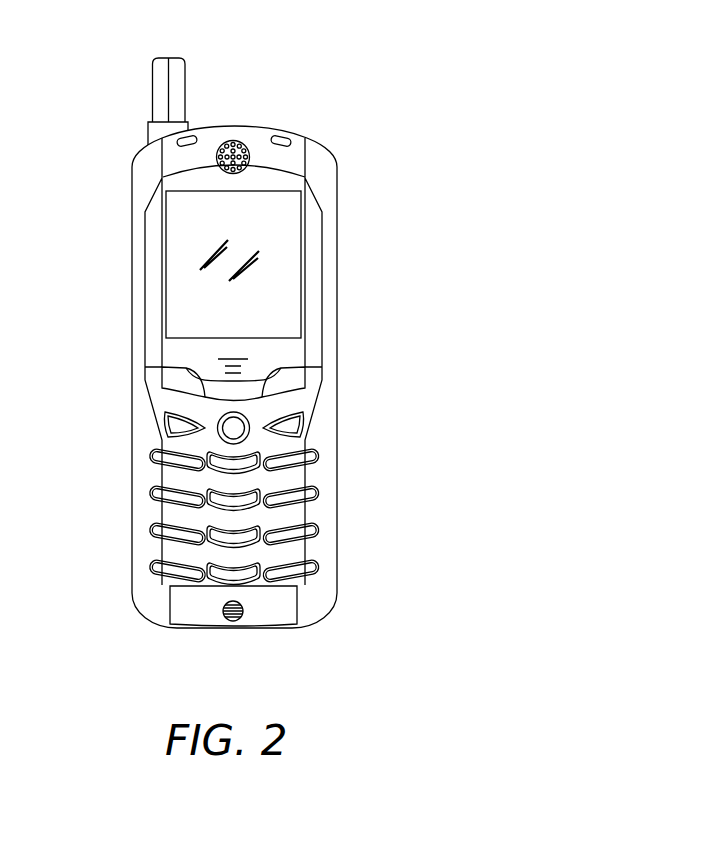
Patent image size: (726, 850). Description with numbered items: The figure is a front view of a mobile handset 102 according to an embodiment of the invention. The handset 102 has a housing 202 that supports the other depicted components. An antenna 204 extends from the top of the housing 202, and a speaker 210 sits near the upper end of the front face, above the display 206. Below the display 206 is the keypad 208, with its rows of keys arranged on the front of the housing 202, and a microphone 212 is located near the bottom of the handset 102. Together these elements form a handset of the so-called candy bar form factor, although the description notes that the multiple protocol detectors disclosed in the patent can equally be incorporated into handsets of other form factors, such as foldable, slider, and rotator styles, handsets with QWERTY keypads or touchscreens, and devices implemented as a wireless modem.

The mobile handset 102 is at (603, 70).
The housing 202 is at (308, 143).
The antenna 204 is at (152, 92).
The display 206 is at (175, 222).
The keypad 208 is at (317, 443).
The speaker 210 is at (232, 139).
The microphone 212 is at (233, 622).